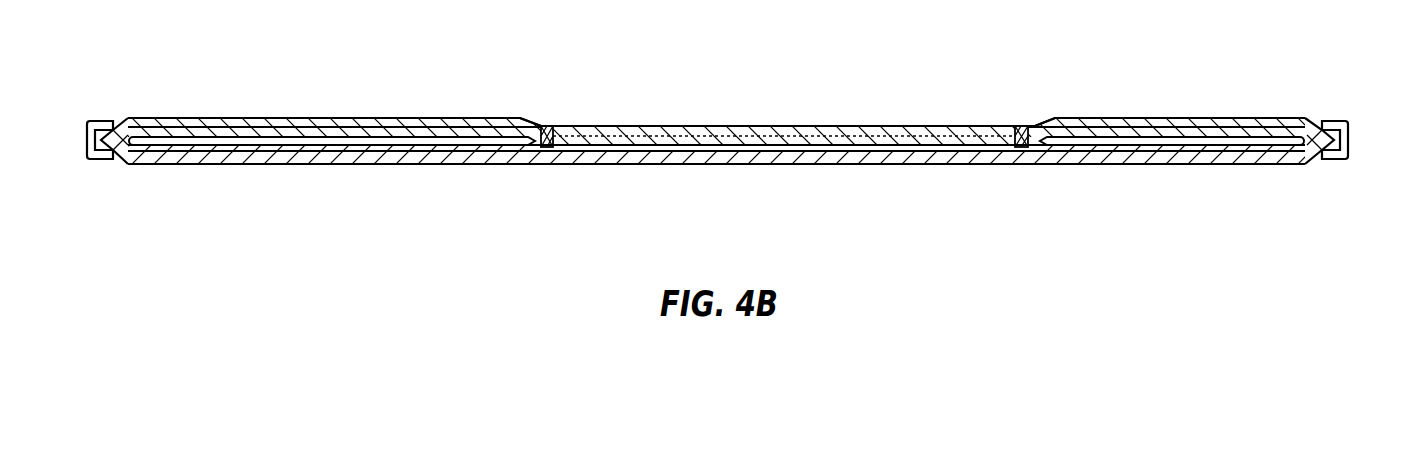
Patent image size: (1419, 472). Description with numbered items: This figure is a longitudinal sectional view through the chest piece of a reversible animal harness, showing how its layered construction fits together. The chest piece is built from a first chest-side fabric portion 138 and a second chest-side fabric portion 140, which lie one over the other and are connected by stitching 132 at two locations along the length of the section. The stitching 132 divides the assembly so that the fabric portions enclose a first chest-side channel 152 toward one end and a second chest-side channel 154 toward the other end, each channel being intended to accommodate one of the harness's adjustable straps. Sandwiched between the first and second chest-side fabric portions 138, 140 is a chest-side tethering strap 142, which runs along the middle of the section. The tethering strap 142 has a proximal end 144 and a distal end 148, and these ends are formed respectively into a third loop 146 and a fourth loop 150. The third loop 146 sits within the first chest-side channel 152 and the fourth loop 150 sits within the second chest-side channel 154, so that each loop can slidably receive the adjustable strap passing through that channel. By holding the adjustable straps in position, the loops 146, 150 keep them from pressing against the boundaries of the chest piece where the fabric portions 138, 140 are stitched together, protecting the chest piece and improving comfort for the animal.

The stitching 132 is at (546, 126).
The first chest-side fabric portion 138 is at (713, 125).
The second chest-side fabric portion 140 is at (680, 165).
The chest-side tethering strap 142 is at (845, 158).
The proximal end 144 is at (128, 116).
The third loop 146 is at (198, 137).
The distal end 148 is at (1307, 116).
The fourth loop 150 is at (1234, 138).
The first chest-side channel 152 is at (298, 130).
The second chest-side channel 154 is at (1135, 131).